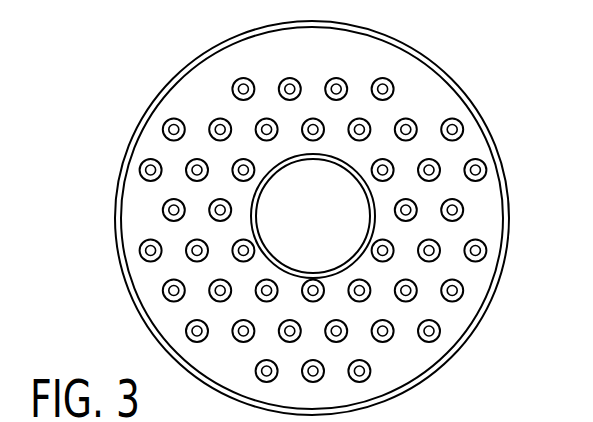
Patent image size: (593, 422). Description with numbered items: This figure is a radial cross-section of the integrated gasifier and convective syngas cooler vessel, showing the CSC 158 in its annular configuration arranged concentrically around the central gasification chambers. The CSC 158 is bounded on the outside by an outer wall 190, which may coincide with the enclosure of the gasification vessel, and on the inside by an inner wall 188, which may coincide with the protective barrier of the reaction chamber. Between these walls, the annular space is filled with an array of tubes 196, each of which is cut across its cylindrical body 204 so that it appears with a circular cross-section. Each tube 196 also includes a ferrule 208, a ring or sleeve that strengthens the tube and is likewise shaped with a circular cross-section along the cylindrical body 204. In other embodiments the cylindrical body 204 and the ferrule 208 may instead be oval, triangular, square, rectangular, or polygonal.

The convective syngas cooler 158 is at (421, 44).
The outer wall 190 is at (235, 38).
The inner wall 188 is at (273, 181).
The tube 196 is at (332, 86).
The cylindrical body 204 is at (395, 97).
The ferrule 208 is at (413, 136).